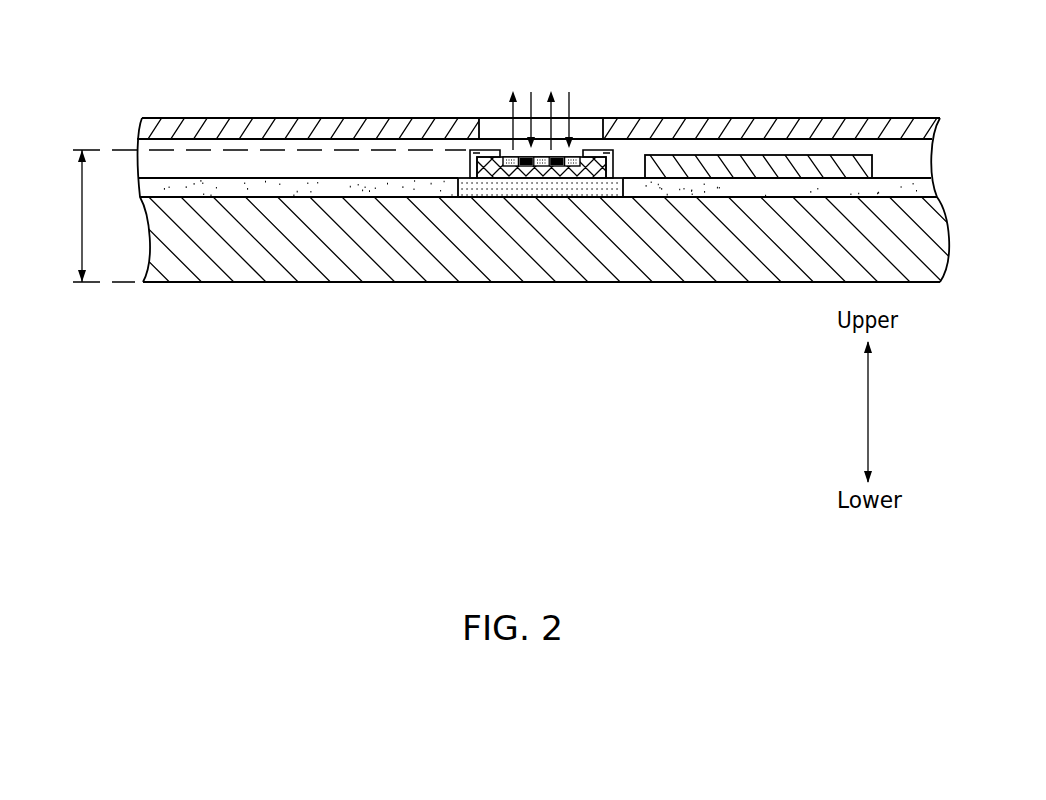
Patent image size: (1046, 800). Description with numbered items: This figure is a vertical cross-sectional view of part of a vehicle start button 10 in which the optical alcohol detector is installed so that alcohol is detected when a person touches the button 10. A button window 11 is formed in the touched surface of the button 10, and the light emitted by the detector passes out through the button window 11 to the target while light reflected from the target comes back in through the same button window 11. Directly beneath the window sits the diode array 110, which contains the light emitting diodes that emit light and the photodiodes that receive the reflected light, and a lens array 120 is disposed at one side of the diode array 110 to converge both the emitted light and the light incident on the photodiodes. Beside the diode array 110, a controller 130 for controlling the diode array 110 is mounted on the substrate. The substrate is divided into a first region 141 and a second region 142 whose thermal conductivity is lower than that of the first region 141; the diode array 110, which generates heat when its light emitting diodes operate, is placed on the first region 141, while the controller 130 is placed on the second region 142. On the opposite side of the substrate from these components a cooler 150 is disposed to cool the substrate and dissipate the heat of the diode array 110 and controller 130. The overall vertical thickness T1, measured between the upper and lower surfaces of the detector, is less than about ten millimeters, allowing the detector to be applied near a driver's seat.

The start button 10 is at (544, 175).
The button window 11 is at (590, 127).
The diode array 110 is at (436, 125).
The lens array 120 is at (440, 163).
The controller 130 is at (803, 165).
The first region 141 is at (533, 193).
The second region 142 is at (297, 192).
The cooler 150 is at (425, 275).
The vertical thickness T1 is at (259, 216).